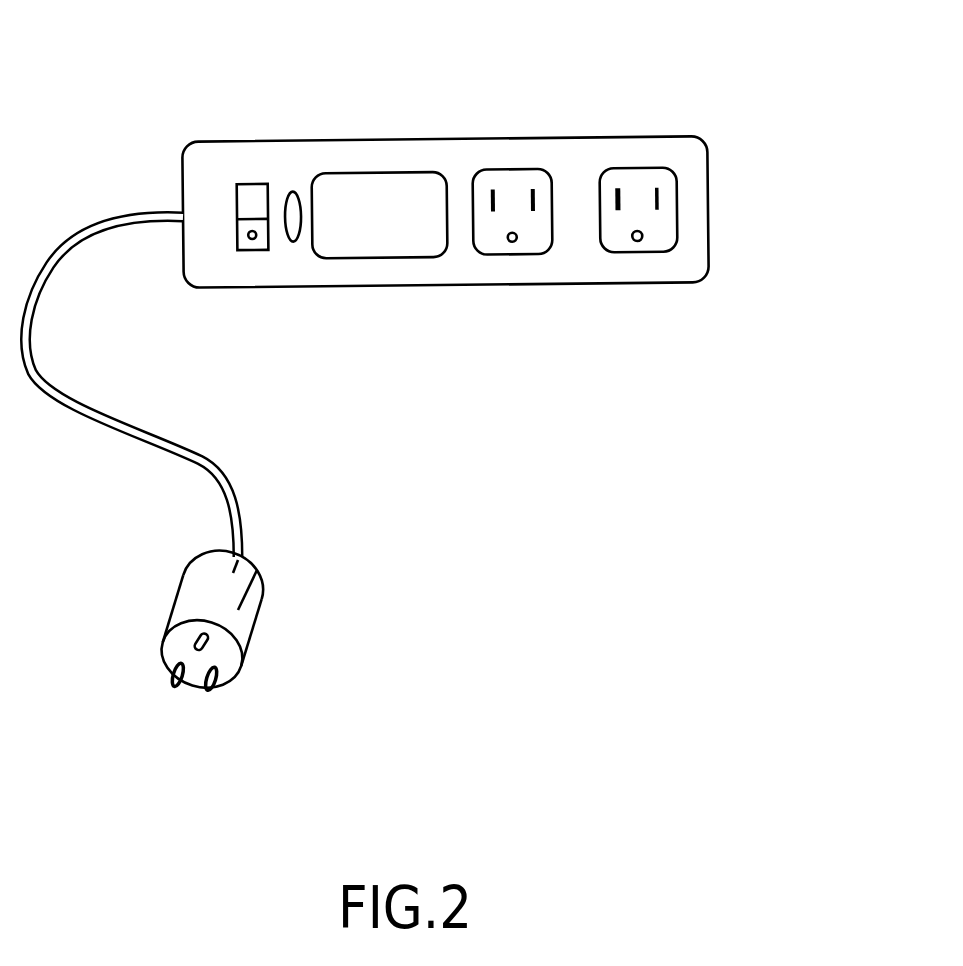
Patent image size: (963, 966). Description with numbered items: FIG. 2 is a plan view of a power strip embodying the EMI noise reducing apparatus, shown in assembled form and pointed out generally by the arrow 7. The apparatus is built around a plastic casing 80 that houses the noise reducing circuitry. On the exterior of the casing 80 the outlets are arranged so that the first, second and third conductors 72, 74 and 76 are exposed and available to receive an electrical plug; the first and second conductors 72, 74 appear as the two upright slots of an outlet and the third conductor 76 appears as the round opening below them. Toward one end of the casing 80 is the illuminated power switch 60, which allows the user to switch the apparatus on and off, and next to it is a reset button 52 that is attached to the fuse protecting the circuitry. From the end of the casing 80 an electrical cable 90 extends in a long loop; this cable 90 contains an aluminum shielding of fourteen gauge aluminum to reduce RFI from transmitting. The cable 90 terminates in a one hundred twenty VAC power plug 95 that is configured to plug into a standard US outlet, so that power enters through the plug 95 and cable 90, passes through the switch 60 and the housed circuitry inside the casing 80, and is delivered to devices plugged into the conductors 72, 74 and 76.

The power strip 7 is at (758, 106).
The reset button 52 is at (262, 287).
The illuminated power switch 60 is at (250, 182).
The first conductor 72 is at (493, 190).
The second conductor 74 is at (533, 190).
The third conductor 76 is at (516, 242).
The plastic casing 80 is at (707, 278).
The electrical cable 90 is at (223, 473).
The power plug 95 is at (265, 610).